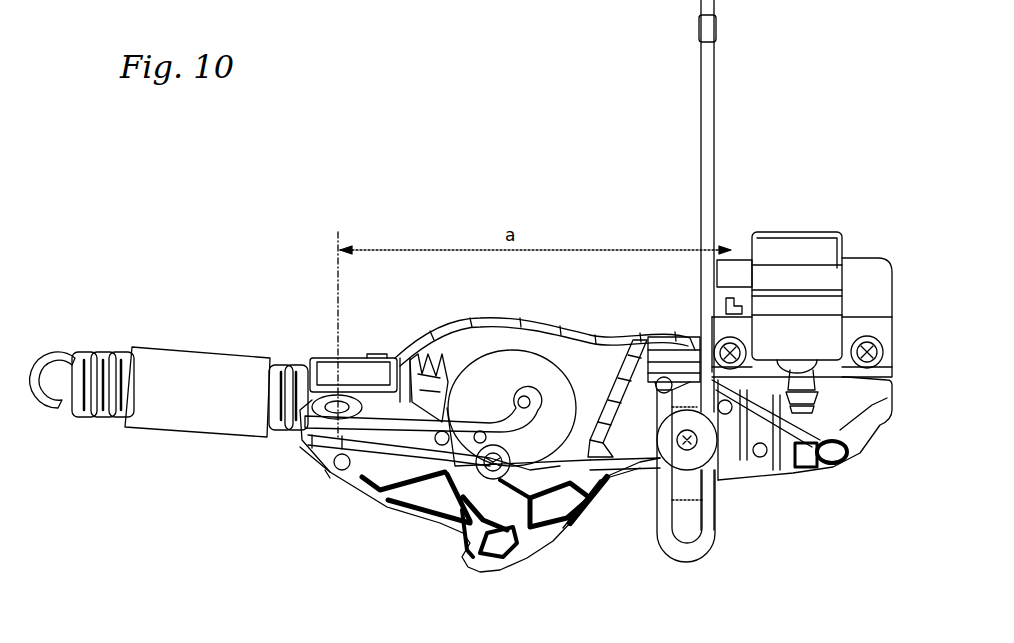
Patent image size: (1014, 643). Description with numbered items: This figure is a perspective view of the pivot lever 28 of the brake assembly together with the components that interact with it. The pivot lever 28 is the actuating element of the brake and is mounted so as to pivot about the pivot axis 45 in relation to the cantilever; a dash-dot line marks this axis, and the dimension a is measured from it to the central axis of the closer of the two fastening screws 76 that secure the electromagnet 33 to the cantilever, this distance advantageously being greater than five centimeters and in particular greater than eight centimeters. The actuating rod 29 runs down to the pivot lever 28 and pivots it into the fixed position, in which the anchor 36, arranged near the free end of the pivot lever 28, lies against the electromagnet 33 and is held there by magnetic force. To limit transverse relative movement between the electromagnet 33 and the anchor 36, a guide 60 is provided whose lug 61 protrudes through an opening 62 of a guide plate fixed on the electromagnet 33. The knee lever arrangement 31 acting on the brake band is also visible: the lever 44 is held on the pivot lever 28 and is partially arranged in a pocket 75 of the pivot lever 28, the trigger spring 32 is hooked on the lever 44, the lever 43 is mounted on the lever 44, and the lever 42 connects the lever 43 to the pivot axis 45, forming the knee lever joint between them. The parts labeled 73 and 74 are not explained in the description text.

The pivot lever 28 is at (430, 508).
The actuating rod 29 is at (713, 130).
The knee lever arrangement 31 is at (470, 414).
The trigger spring 32 is at (106, 362).
The electromagnet 33 is at (803, 255).
The anchor 36 is at (870, 405).
The lever 42 is at (385, 425).
The lever 43 is at (465, 513).
The lever 44 is at (560, 500).
The pivot axis 45 is at (332, 478).
The guide 60 is at (770, 470).
The lug 61 is at (846, 462).
The opening 62 is at (816, 468).
The bolt 73 is at (816, 356).
The bracket 74 is at (412, 356).
The pocket 75 is at (577, 446).
The fastening screws 76 is at (733, 336).